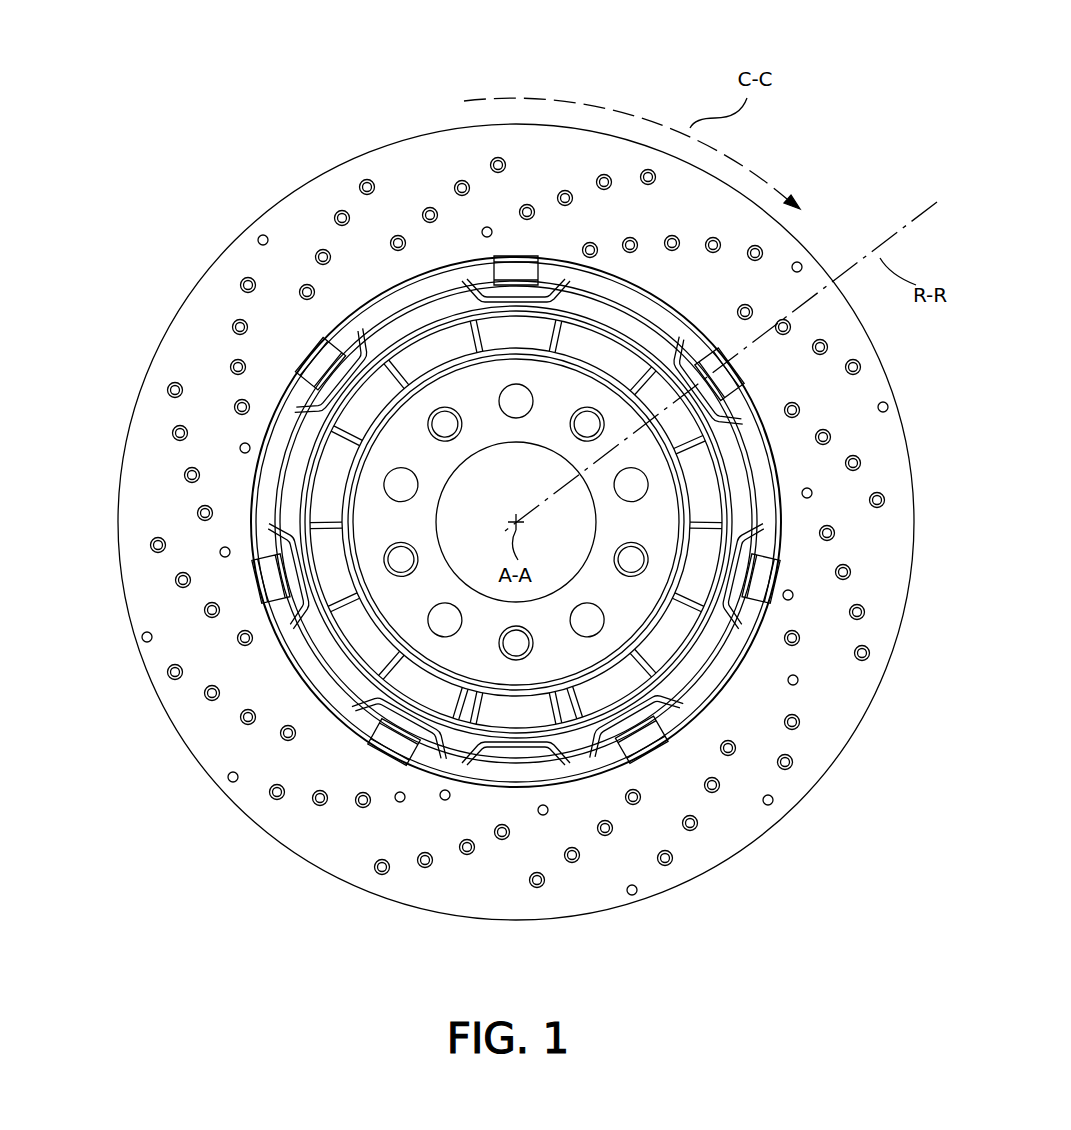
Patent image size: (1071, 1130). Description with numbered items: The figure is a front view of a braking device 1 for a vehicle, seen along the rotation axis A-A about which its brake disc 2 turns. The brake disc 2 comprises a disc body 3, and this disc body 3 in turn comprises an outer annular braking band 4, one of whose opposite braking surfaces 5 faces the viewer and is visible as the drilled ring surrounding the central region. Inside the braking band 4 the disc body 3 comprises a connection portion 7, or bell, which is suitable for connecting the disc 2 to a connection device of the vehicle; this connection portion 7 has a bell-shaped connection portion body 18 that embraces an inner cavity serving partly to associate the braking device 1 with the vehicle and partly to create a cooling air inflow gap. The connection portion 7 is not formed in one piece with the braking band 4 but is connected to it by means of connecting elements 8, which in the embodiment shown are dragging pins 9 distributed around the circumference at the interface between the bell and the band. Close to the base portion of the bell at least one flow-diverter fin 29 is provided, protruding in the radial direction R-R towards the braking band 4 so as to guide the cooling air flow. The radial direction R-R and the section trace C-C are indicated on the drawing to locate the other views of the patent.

The braking device 1 is at (822, 125).
The brake disc 2 is at (210, 317).
The disc body 3 is at (263, 675).
The braking band 4 is at (167, 635).
The braking surface 5 is at (852, 565).
The connection portion 7 is at (565, 657).
The connecting elements 8 is at (490, 267).
The dragging pins 9 is at (387, 748).
The connection portion body 18 is at (393, 615).
The flow-diverter fin 29 is at (650, 292).